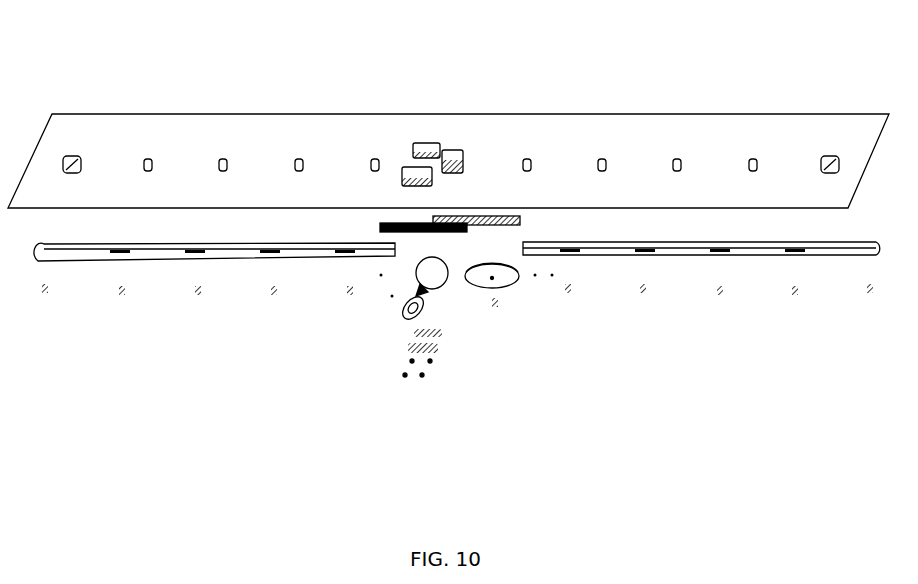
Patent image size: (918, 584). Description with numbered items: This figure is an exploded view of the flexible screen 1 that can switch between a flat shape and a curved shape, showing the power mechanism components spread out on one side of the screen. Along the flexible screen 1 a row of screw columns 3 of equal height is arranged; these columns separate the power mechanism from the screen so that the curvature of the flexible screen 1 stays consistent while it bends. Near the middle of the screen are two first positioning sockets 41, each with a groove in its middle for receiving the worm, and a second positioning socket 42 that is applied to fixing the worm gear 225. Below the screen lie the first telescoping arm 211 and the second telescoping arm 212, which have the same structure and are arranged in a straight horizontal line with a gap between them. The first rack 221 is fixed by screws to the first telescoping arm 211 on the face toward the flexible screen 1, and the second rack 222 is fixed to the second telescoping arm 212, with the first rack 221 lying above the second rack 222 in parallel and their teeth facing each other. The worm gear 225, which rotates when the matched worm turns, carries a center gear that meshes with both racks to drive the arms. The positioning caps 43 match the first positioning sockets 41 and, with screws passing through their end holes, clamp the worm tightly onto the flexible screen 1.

The flexible screen 1 is at (448, 111).
The screw columns 3 is at (451, 94).
The first positioning sockets 41 is at (443, 100).
The second positioning socket 42 is at (507, 94).
The first rack 221 is at (531, 145).
The second rack 222 is at (494, 339).
The worm gear 225 is at (537, 331).
The positioning caps 43 is at (457, 381).
The second telescoping arm 212 is at (214, 316).
The first telescoping arm 211 is at (701, 315).